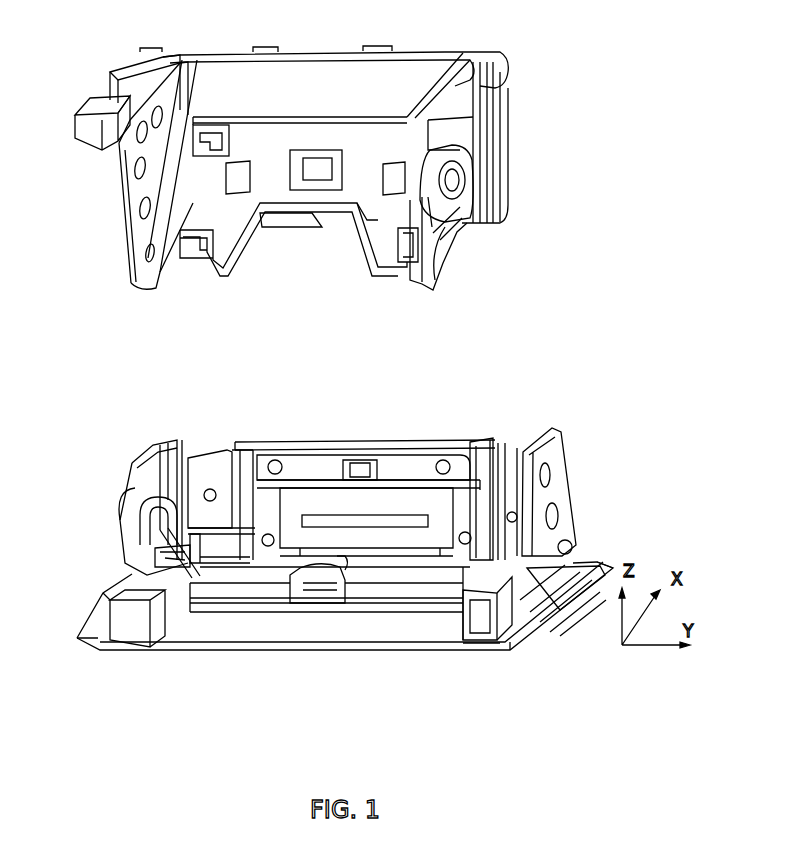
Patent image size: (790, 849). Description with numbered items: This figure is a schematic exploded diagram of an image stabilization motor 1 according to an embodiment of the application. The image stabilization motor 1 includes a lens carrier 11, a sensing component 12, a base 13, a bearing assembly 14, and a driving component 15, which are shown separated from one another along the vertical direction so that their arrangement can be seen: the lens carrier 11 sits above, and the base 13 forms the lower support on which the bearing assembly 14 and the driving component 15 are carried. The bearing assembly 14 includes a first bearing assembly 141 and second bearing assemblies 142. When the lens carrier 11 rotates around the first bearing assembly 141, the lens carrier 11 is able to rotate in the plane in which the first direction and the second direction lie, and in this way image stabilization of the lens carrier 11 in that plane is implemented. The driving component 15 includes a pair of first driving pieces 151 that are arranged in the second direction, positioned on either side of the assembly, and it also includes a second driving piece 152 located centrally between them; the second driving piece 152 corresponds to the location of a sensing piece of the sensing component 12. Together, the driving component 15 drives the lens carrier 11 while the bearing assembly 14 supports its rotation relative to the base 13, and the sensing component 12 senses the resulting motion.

The image stabilization motor 1 is at (606, 156).
The lens carrier 11 is at (427, 60).
The sensing component 12 is at (500, 148).
The base 13 is at (578, 557).
The bearing assembly 14 is at (420, 693).
The first bearing assembly 141 is at (345, 592).
The second bearing assemblies 142 is at (195, 603).
The driving component 15 is at (440, 385).
The first driving pieces 151 is at (192, 445).
The second driving piece 152 is at (313, 500).